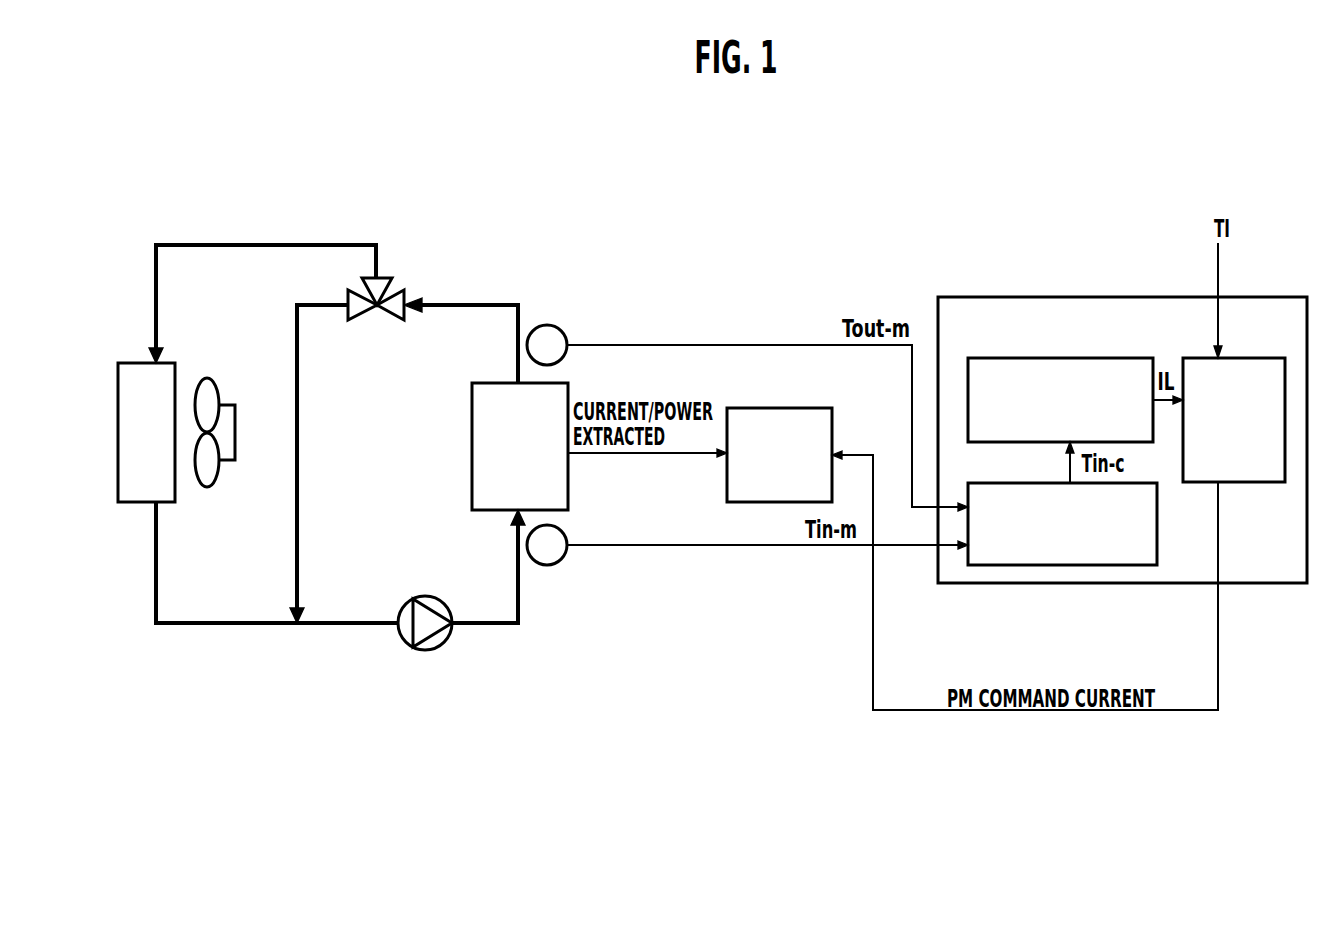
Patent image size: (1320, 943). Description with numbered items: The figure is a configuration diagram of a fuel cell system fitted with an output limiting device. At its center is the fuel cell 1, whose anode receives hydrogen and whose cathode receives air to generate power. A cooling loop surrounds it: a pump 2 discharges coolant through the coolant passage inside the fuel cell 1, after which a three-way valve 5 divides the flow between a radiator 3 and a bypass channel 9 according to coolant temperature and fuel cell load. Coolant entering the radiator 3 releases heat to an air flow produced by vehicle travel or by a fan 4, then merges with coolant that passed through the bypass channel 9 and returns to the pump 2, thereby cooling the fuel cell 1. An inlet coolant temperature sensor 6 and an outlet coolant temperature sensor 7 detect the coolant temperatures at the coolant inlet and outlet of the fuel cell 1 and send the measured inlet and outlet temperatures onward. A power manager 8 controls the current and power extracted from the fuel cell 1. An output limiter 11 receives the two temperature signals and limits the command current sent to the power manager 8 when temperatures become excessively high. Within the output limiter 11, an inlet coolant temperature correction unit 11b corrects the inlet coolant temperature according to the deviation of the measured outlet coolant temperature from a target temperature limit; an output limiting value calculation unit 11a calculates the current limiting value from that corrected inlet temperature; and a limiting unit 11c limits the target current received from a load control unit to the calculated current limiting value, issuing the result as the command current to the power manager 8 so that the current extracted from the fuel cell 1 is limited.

The fuel cell 1 is at (472, 460).
The pump 2 is at (425, 650).
The radiator 3 is at (170, 362).
The fan 4 is at (207, 488).
The three-way valve 5 is at (386, 298).
The inlet coolant temperature sensor 6 is at (546, 565).
The outlet coolant temperature sensor 7 is at (546, 325).
The power manager 8 is at (765, 407).
The bypass channel 9 is at (297, 373).
The output limiter 11 is at (997, 296).
The output limiting value calculation unit 11a is at (1035, 358).
The inlet coolant temperature correction unit 11b is at (1157, 505).
The limiting unit 11c is at (1230, 483).